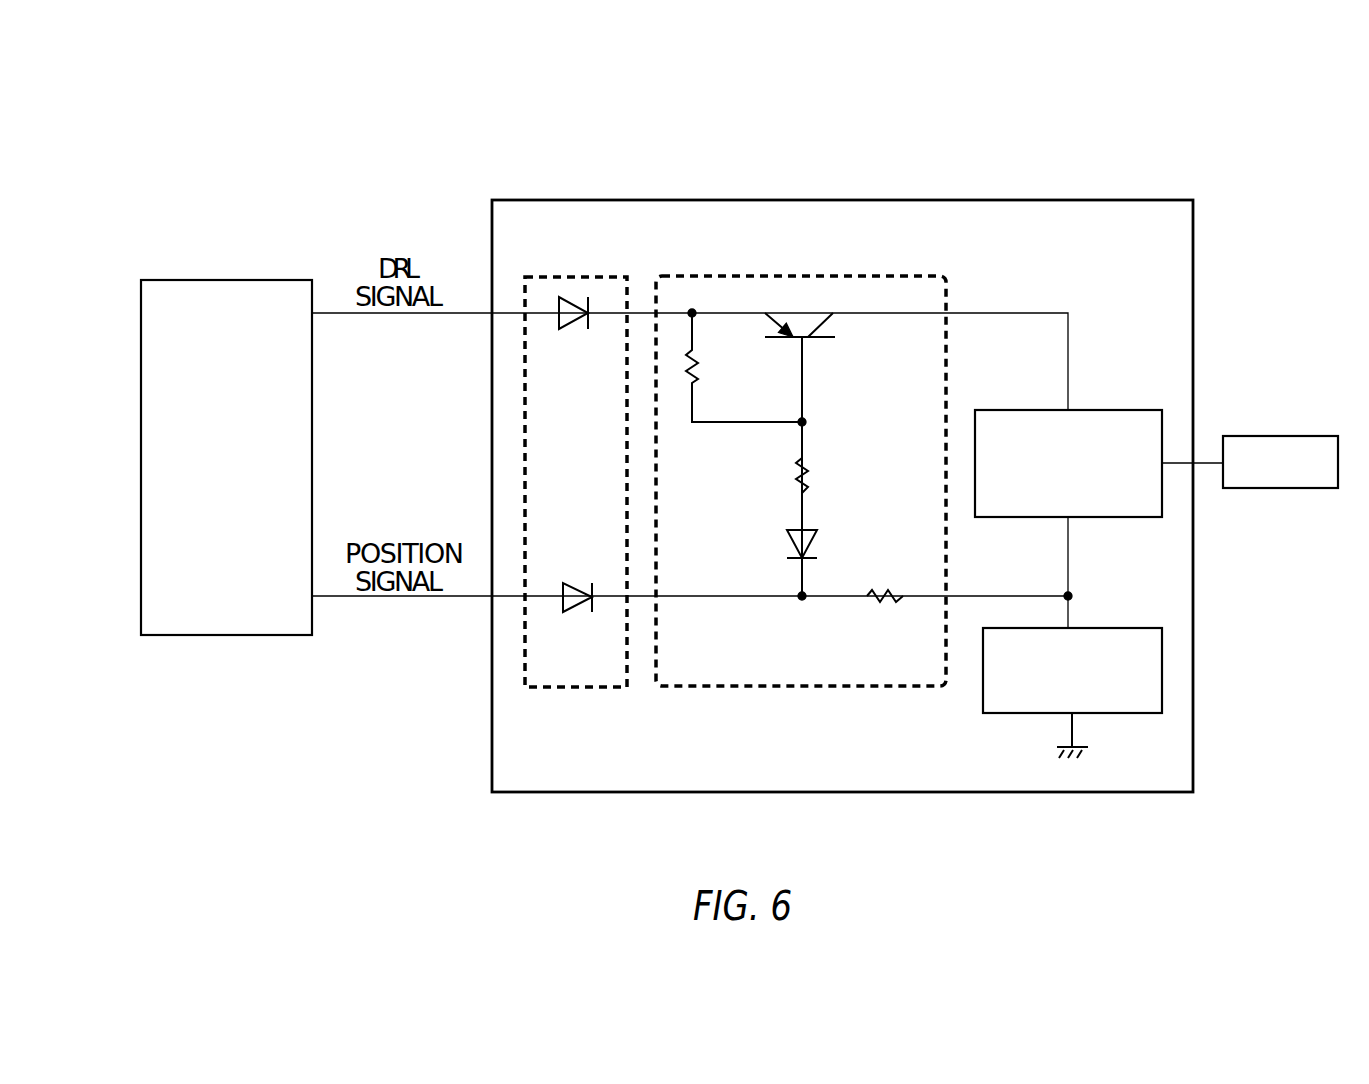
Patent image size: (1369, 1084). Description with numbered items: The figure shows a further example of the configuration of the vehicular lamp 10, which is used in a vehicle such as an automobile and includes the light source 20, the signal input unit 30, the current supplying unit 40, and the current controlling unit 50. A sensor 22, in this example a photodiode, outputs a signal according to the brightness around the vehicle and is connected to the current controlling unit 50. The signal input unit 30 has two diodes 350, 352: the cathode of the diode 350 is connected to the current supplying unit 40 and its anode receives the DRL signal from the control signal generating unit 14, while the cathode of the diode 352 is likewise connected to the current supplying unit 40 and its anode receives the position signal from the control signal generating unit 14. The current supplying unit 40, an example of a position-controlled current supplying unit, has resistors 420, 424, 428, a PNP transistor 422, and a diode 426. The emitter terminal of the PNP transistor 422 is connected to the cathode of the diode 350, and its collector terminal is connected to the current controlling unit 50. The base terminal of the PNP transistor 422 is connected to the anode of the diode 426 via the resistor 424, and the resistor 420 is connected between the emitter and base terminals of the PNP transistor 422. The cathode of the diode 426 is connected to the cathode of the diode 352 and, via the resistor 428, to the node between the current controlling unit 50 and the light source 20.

The vehicular lamp 10 is at (1065, 199).
The control signal generating unit 14 is at (225, 280).
The light source 20 is at (1118, 628).
The sensor 22 is at (1280, 436).
The signal input unit 30 is at (573, 277).
The current supplying unit 40 is at (800, 276).
The current controlling unit 50 is at (1115, 410).
The diode 350 is at (574, 331).
The diode 352 is at (578, 613).
The resistor 420 is at (705, 363).
The PNP transistor 422 is at (836, 325).
The resistor 424 is at (815, 472).
The diode 426 is at (786, 540).
The resistor 428 is at (893, 605).